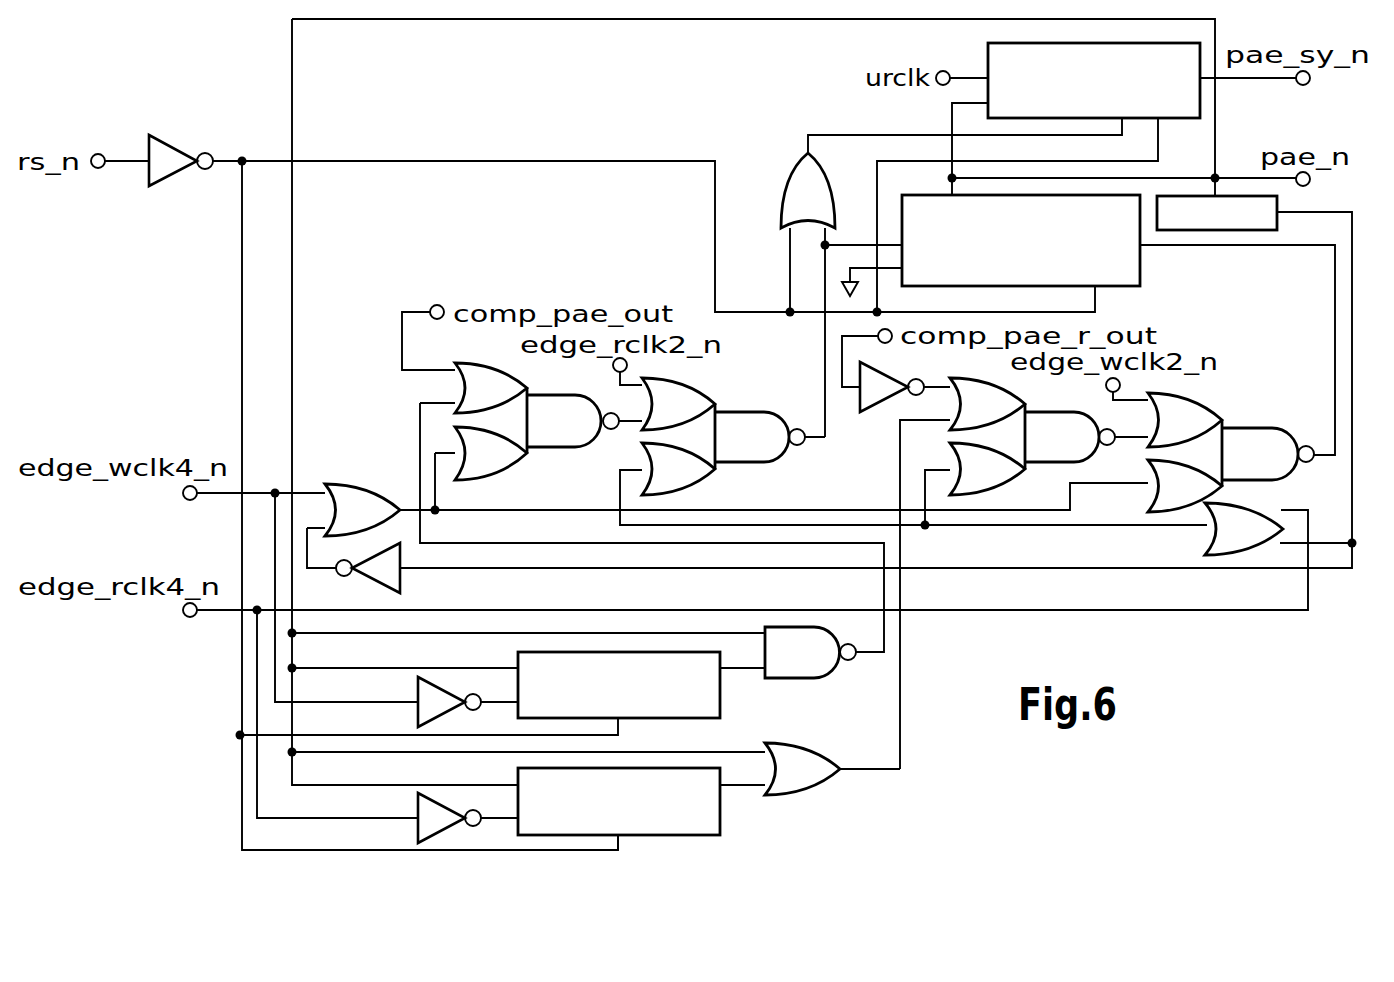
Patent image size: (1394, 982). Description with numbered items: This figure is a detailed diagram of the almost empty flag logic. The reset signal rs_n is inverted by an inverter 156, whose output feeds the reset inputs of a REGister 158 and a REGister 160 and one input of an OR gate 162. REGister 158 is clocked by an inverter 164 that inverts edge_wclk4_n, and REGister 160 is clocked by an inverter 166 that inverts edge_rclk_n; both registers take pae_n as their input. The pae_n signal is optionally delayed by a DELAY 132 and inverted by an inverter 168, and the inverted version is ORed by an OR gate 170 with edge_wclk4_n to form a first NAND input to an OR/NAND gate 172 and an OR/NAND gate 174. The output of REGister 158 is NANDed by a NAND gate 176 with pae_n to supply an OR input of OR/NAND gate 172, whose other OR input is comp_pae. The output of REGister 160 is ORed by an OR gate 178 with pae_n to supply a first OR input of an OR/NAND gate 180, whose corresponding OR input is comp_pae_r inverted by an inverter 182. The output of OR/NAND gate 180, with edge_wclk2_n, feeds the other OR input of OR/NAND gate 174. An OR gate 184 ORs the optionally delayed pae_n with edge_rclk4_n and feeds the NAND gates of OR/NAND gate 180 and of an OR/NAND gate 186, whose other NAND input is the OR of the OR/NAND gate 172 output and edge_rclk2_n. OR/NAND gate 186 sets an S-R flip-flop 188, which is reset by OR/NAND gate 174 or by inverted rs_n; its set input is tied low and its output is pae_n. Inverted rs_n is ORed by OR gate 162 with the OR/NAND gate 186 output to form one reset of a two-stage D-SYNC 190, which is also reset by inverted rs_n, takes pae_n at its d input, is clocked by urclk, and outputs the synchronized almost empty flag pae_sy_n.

The DELAY 132 is at (1258, 231).
The inverter 156 is at (180, 148).
The REGister 158 is at (722, 712).
The REGister 160 is at (722, 828).
The OR gate 162 is at (782, 183).
The inverter 164 is at (418, 715).
The inverter 166 is at (418, 832).
The inverter 168 is at (404, 586).
The OR gate 170 is at (355, 481).
The OR/NAND gate 172 is at (522, 472).
The OR/NAND gate 174 is at (1246, 414).
The NAND gate 176 is at (805, 680).
The OR gate 178 is at (820, 790).
The OR/NAND gate 180 is at (932, 447).
The inverter 182 is at (852, 405).
The OR gate 184 is at (1215, 545).
The OR/NAND gate 186 is at (727, 474).
The S-R flip-flop 188 is at (1128, 287).
The two-stage D-synchronizer (D-SYNC) 190 is at (988, 52).